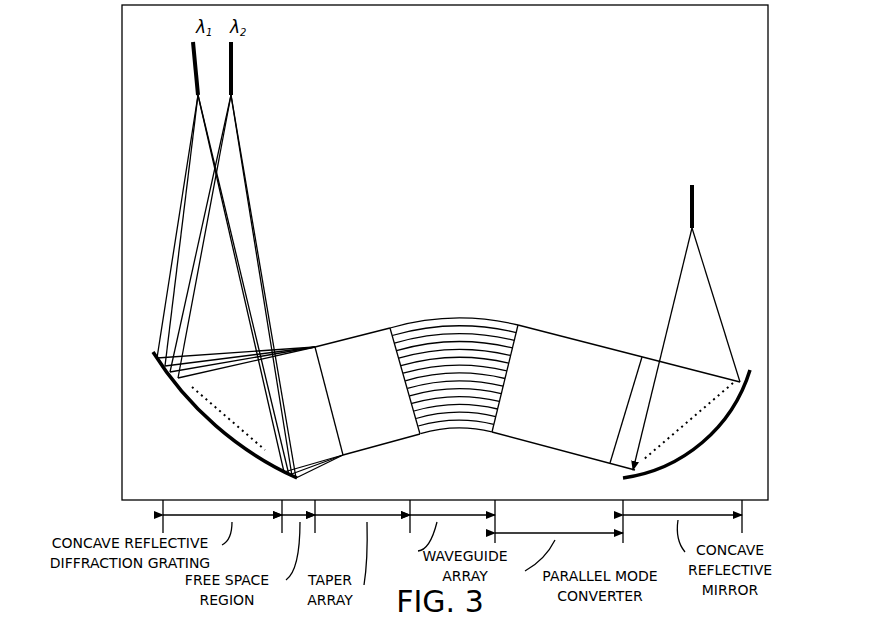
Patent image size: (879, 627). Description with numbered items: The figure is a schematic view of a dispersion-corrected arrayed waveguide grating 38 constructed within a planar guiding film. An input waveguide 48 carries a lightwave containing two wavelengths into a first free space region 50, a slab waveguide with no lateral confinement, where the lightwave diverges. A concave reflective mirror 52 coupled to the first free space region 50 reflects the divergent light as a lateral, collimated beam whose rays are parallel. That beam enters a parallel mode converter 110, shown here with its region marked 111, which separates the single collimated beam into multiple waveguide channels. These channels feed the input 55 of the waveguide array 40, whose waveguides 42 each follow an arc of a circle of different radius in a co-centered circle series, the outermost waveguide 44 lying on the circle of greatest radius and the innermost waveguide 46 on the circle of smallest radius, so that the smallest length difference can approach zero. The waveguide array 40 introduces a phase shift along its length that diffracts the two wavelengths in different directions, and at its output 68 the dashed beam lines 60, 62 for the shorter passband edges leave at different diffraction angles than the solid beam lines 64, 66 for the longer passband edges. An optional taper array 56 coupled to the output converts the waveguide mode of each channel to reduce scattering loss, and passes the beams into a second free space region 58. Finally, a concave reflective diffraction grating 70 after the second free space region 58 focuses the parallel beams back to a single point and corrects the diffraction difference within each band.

The dispersion-corrected arrayed waveguide grating 38 is at (590, 110).
The waveguide array 40 is at (461, 306).
The waveguide 42 is at (412, 320).
The outermost waveguide 44 is at (483, 322).
The innermost waveguide 46 is at (455, 434).
The input waveguide 48 is at (697, 206).
The first free space region 50 is at (664, 400).
The concave reflective mirror 52 is at (685, 446).
The input of waveguide array 55 is at (520, 326).
The taper array 56 is at (348, 396).
The second free space region 58 is at (296, 421).
The dashed beam line 60 is at (170, 264).
The dashed beam line 62 is at (180, 320).
The solid beam line 64 is at (178, 290).
The solid beam line 66 is at (190, 330).
The output of waveguide array 68 is at (390, 327).
The concave reflective diffraction grating 70 is at (220, 431).
The parallel mode converter 110 is at (545, 403).
The parallel mode converter region 111 is at (583, 403).